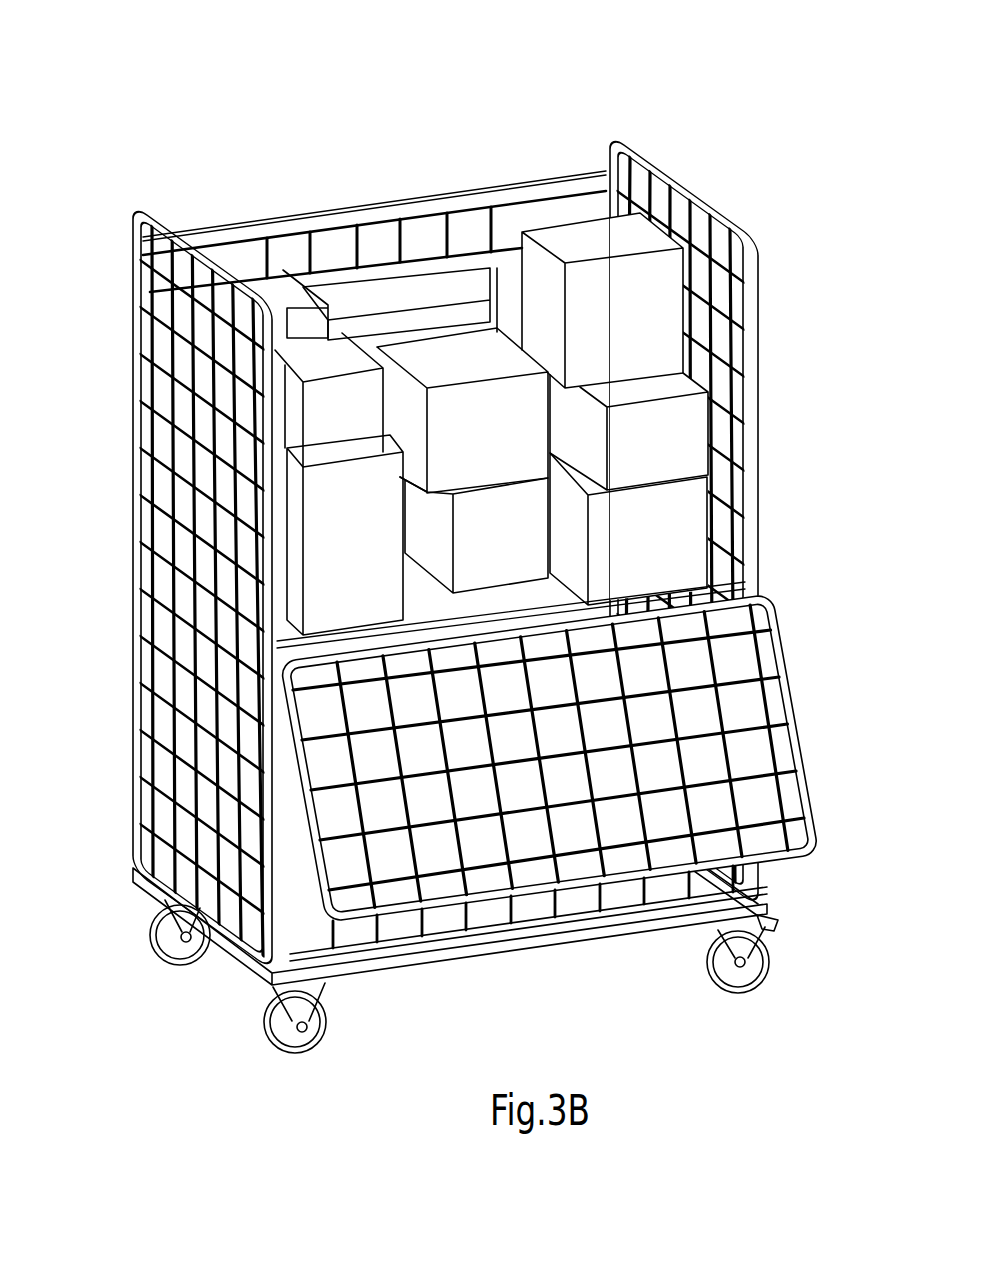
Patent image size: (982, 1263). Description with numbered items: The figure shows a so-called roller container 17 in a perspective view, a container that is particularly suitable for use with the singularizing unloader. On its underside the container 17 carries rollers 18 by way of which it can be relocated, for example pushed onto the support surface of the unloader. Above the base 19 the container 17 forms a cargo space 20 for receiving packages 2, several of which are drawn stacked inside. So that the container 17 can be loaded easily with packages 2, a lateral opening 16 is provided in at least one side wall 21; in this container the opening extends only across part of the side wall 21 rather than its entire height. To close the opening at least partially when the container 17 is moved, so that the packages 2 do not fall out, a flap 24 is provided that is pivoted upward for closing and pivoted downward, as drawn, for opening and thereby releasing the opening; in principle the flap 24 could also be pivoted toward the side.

The package 2 is at (497, 272).
The lateral opening 16 is at (334, 548).
The container 17 is at (205, 117).
The rollers 18 is at (180, 952).
The base 19 is at (592, 939).
The cargo space 20 is at (400, 297).
The side wall 21 is at (778, 455).
The flap 24 is at (795, 734).